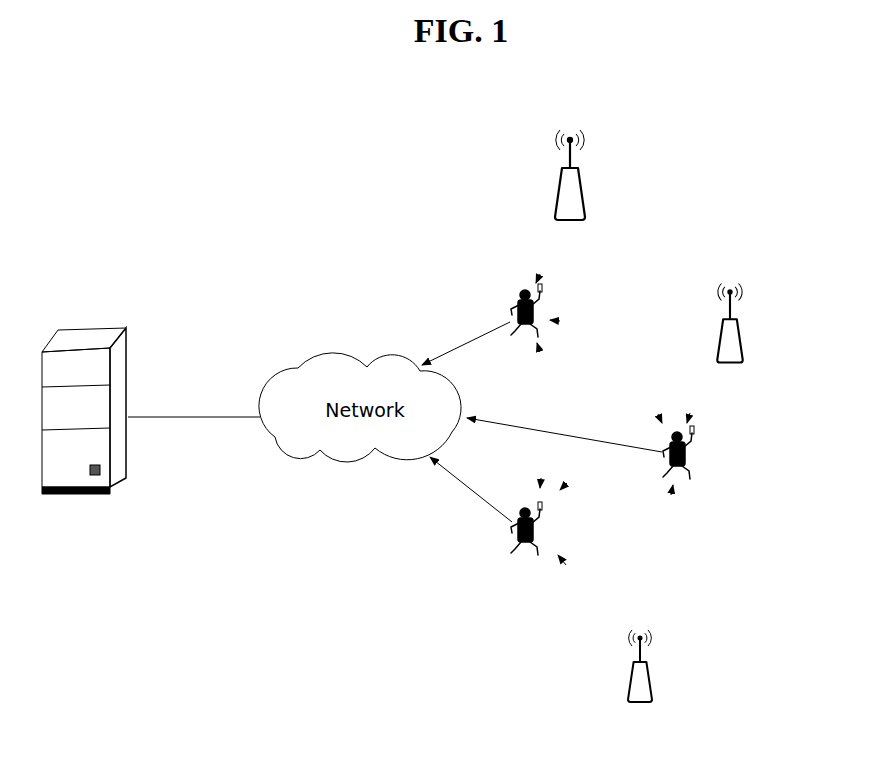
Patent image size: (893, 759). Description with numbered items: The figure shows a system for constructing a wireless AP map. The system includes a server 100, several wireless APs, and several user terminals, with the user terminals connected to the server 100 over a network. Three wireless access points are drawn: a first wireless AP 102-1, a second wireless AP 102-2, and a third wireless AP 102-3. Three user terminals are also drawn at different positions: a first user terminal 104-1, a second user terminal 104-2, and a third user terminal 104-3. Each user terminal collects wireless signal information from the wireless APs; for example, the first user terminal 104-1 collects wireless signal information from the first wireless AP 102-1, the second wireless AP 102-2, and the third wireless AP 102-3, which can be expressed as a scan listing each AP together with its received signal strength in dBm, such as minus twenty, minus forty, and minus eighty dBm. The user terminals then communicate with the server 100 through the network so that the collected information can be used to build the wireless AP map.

The server 100 is at (87, 328).
The first wireless AP 102-1 is at (582, 170).
The second wireless AP 102-2 is at (742, 338).
The third wireless AP 102-3 is at (658, 682).
The first user terminal 104-1 is at (520, 296).
The second user terminal 104-2 is at (700, 455).
The third user terminal 104-3 is at (513, 530).